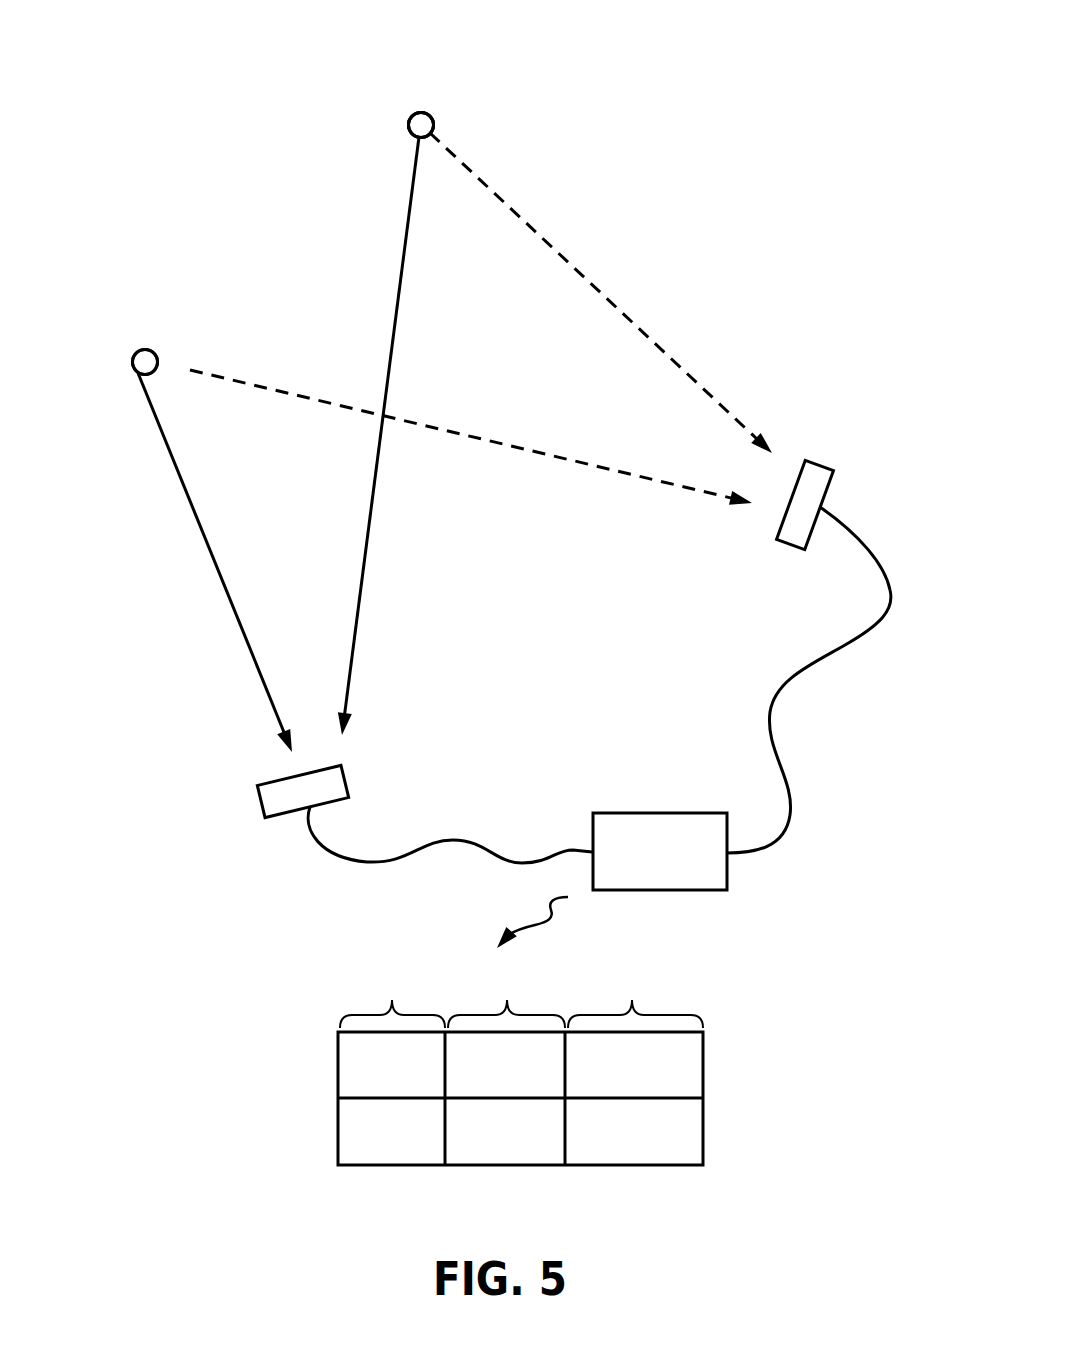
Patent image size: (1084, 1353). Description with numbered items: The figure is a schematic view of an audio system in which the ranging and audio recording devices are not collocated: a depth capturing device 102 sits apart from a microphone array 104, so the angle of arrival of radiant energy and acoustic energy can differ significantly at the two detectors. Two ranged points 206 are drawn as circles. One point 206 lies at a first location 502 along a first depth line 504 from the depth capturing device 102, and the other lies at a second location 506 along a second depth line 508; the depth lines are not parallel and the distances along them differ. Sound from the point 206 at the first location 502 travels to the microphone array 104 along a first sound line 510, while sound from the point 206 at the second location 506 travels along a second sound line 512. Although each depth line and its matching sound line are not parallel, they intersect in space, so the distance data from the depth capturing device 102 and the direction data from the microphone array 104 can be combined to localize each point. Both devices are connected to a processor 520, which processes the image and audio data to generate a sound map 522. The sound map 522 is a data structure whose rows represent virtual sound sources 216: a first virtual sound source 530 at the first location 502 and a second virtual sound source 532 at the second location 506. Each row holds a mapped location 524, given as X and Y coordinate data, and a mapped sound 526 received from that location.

The depth capturing device 102 is at (817, 462).
The microphone array 104 is at (258, 798).
The point 206 is at (421, 125).
The virtual sound source 216 is at (392, 998).
The first location 502 is at (147, 349).
The first depth line 504 is at (262, 387).
The second location 506 is at (432, 117).
The second depth line 508 is at (583, 278).
The first sound line 510 is at (205, 542).
The second sound line 512 is at (405, 238).
The processor 520 is at (697, 890).
The sound map 522 is at (640, 1067).
The mapped location 524 is at (506, 998).
The mapped sound 526 is at (635, 998).
The first virtual sound source 530 is at (145, 362).
The second virtual sound source 532 is at (421, 125).